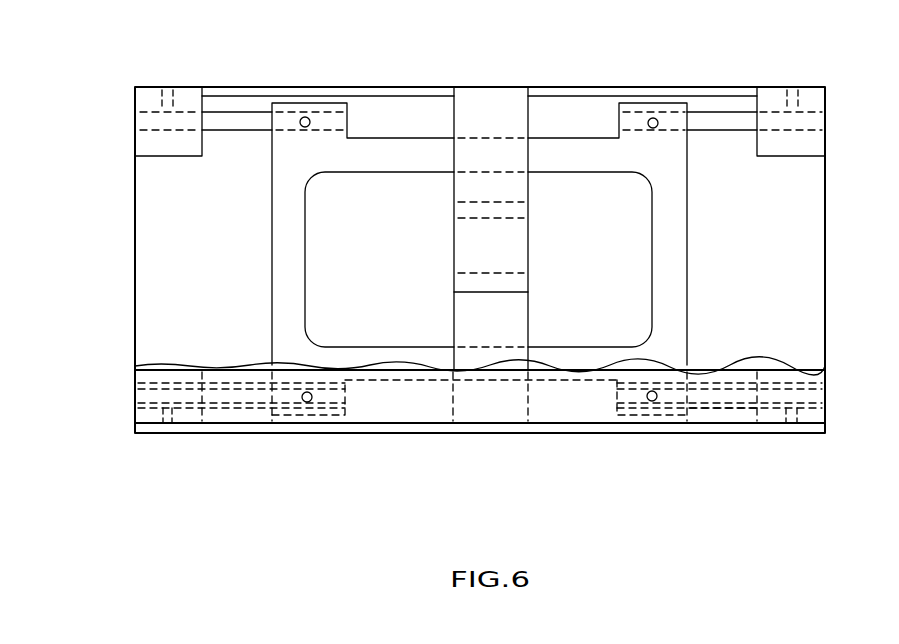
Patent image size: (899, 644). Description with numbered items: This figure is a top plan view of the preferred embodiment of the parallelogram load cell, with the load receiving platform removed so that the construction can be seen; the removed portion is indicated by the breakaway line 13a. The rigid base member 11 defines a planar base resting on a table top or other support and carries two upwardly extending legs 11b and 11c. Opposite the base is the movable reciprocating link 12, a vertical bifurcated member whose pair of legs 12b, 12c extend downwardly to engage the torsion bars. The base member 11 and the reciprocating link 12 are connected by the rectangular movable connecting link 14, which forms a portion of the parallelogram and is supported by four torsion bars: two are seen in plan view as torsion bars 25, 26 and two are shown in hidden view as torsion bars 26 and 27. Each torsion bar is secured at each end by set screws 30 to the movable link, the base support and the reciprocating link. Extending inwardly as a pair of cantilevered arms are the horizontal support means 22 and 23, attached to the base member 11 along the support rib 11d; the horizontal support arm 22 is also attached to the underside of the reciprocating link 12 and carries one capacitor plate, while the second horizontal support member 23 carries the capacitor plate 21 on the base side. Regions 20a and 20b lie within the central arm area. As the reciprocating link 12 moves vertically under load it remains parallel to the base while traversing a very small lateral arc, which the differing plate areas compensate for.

The base member 11 is at (768, 285).
The upwardly extending leg 11b is at (168, 156).
The upwardly extending leg 11c is at (792, 157).
The support rib 11d is at (403, 87).
The movable link 12 is at (410, 402).
The leg of reciprocating link 12b is at (135, 378).
The leg of reciprocating link 12c is at (817, 377).
The breakaway line 13a is at (163, 363).
The movable connecting link 14 is at (282, 195).
The upper passage 20a is at (454, 210).
The lower passage 20b is at (454, 282).
The capacitor plate 21 is at (524, 239).
The horizontal support member 22 is at (524, 313).
The second horizontal support member 23 is at (523, 178).
The torsion bar 25 is at (237, 133).
The torsion bar 26 is at (733, 133).
The torsion bar 27 is at (723, 408).
The set screw 30 is at (170, 97).